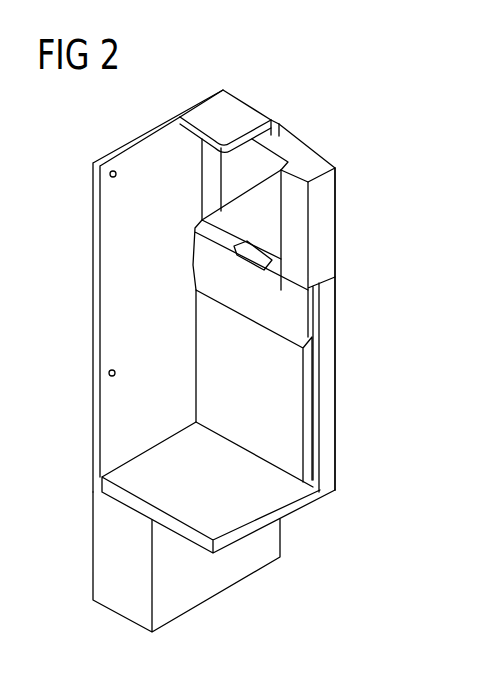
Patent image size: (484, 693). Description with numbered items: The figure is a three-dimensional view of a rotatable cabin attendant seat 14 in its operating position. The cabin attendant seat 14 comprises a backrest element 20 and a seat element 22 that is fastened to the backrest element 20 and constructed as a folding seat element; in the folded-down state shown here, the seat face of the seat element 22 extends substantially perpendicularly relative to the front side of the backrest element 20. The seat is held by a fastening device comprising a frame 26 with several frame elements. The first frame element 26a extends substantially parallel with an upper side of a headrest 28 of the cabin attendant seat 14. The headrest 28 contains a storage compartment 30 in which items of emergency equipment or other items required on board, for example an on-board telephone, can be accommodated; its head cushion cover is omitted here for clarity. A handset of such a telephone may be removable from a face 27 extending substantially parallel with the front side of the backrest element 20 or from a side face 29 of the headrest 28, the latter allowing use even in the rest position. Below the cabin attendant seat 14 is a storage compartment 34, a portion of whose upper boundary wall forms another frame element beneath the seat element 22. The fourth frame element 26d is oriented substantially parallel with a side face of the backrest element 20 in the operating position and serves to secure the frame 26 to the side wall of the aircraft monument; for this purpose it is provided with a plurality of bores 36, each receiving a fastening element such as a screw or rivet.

The cabin attendant seat 14 is at (345, 166).
The backrest element 20 is at (224, 344).
The seat element 22 is at (229, 470).
The frame 26 is at (264, 106).
The first frame element 26a is at (212, 125).
The fourth frame element 26d is at (125, 290).
The face 27 is at (296, 185).
The headrest 28 is at (297, 260).
The side face 29 is at (323, 232).
The storage compartment 30 is at (235, 170).
The storage compartment 34 is at (193, 587).
The bores 36 is at (117, 178).